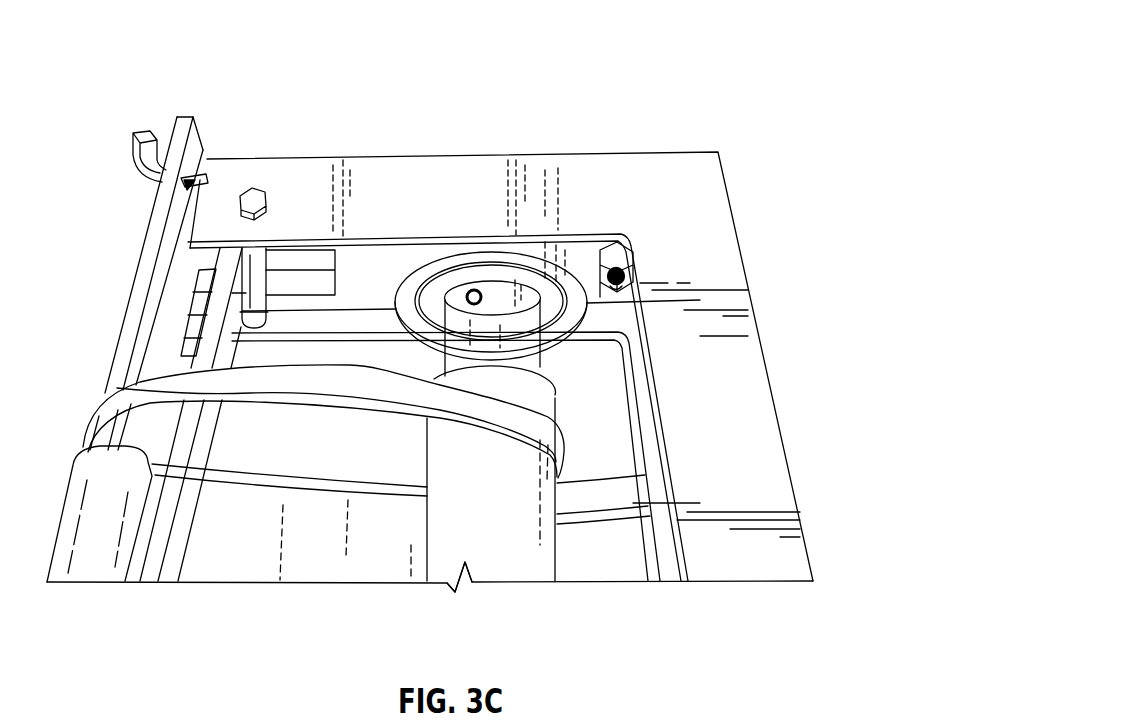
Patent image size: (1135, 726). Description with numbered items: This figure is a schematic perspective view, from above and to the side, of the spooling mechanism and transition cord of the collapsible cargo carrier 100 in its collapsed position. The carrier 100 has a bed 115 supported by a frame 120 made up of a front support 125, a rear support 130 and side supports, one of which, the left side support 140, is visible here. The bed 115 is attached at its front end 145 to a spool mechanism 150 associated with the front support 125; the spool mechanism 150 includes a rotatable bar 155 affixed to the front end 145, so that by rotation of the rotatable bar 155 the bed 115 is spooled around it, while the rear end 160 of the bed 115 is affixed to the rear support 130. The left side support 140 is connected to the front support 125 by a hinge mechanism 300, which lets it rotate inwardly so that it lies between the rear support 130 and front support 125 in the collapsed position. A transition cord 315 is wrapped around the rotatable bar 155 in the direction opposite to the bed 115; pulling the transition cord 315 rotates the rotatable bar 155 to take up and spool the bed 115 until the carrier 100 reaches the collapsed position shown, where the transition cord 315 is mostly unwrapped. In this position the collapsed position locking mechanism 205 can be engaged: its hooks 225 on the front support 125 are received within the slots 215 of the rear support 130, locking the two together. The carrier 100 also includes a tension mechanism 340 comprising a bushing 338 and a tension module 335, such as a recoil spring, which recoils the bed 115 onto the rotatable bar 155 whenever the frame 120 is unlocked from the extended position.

The collapsible cargo carrier 100 is at (440, 337).
The bed 115 is at (295, 557).
The frame 120 is at (579, 76).
The front support 125 is at (723, 366).
The rear support 130 is at (155, 246).
The left side support 140 is at (181, 472).
The front end 145 is at (446, 466).
The spool mechanism 150 is at (488, 601).
The rotatable bar 155 is at (525, 352).
The rear end 160 is at (206, 521).
The collapsed position locking mechanism 205 is at (176, 131).
The slot 215 is at (186, 176).
The hook 225 is at (130, 158).
The hinge mechanism 300 is at (225, 112).
The transition cord 315 is at (127, 401).
The tension module 335 is at (442, 288).
The bushing 338 is at (508, 292).
The tension mechanism 340 is at (685, 214).